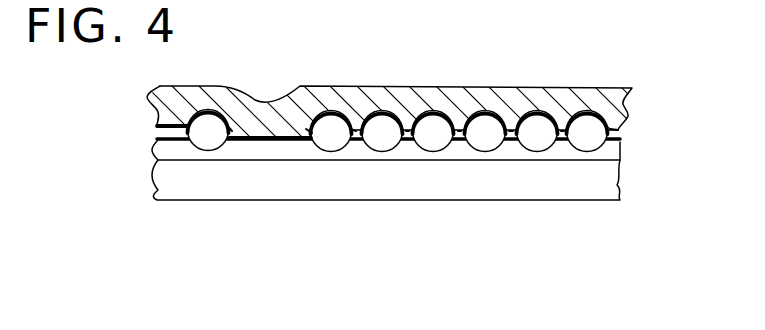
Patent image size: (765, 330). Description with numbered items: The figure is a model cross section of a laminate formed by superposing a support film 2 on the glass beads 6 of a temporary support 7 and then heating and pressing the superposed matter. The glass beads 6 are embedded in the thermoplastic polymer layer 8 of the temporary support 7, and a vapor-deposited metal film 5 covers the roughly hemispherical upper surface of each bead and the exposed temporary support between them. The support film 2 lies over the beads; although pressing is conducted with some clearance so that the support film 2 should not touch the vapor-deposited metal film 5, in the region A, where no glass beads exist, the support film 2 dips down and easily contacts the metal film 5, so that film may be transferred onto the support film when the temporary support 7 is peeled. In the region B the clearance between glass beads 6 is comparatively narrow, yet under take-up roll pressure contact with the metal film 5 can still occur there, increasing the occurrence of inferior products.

The support film 2 is at (542, 100).
The vapor-deposited metal film 5 is at (598, 112).
The glass beads 6 is at (380, 144).
The temporary support 7 is at (637, 140).
The thermoplastic polymer layer 8 is at (620, 137).
The region A is at (305, 74).
The region B is at (445, 78).